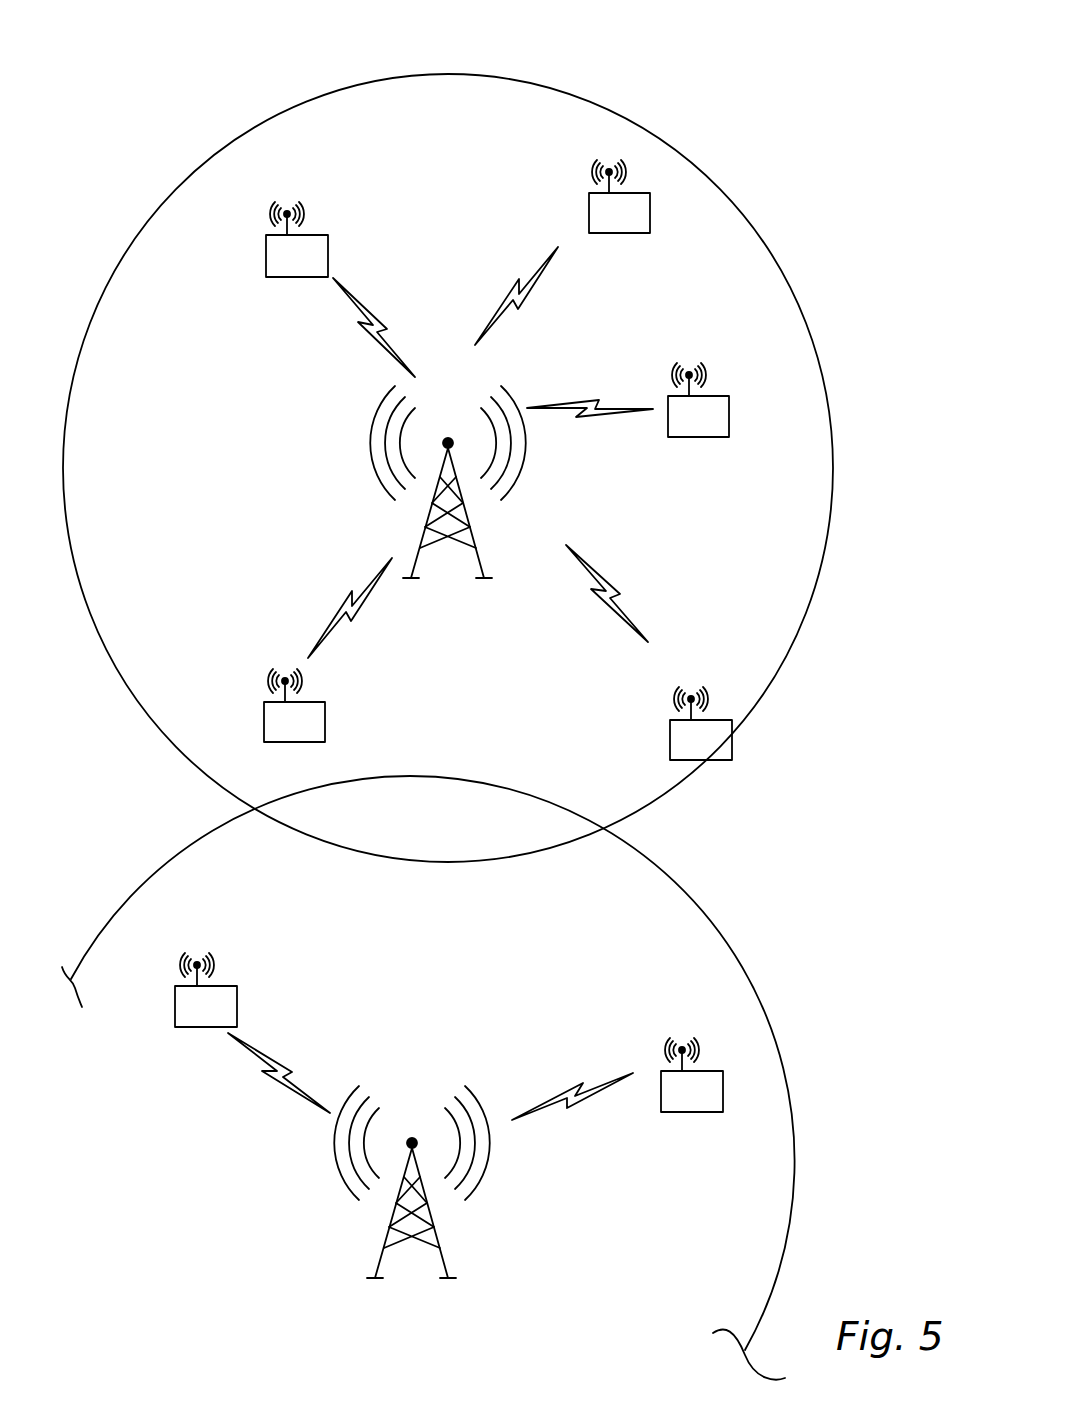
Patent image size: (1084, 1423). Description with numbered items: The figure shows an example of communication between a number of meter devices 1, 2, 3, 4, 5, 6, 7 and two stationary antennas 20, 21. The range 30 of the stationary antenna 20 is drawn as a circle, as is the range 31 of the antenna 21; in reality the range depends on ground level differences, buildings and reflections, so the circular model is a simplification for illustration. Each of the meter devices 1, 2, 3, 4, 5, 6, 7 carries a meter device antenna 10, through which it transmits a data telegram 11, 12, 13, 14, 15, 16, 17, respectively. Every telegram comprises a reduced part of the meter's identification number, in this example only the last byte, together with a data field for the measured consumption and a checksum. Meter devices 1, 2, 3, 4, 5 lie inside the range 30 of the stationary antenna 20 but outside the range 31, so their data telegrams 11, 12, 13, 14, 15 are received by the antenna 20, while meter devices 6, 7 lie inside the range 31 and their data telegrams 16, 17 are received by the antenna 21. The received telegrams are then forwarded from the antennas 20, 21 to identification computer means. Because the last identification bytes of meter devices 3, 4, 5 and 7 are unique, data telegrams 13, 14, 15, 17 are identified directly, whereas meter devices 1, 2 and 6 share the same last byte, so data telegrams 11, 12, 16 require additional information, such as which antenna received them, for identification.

The meter device 1 is at (329, 246).
The meter device 2 is at (651, 204).
The meter device 3 is at (731, 409).
The meter device 4 is at (326, 713).
The meter device 5 is at (670, 740).
The meter device 6 is at (238, 1002).
The meter device 7 is at (724, 1079).
The meter device antenna 10 is at (266, 234).
The data telegram 11 is at (363, 334).
The data telegram 12 is at (514, 283).
The data telegram 13 is at (596, 415).
The data telegram 14 is at (357, 612).
The data telegram 15 is at (617, 580).
The data telegram 16 is at (272, 1087).
The data telegram 17 is at (576, 1108).
The stationary antenna 20 is at (425, 540).
The stationary antenna 21 is at (388, 1233).
The range 30 is at (240, 138).
The range 31 is at (162, 866).